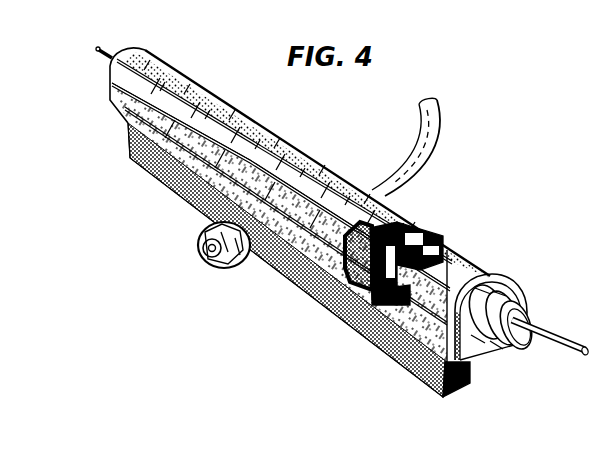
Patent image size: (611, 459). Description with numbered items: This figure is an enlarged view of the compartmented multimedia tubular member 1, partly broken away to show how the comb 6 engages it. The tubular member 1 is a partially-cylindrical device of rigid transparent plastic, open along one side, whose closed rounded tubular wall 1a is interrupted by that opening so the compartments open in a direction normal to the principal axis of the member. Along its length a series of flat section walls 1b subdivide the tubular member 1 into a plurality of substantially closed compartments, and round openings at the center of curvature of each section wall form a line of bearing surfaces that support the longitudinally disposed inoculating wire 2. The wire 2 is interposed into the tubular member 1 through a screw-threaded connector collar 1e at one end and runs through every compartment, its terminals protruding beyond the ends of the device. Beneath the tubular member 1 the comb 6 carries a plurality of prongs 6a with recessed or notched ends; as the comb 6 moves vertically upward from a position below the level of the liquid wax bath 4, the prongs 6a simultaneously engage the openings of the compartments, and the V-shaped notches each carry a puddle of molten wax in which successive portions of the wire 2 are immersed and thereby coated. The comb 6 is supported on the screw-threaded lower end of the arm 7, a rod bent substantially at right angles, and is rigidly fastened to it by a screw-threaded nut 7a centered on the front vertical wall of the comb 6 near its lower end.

The tubular member 1 is at (280, 134).
The tubular wall 1a is at (156, 53).
The section walls 1b is at (227, 111).
The screw-threaded connector collar 1e is at (536, 306).
The inoculating wire 2 is at (100, 49).
The wax bath 4 is at (440, 247).
The comb 6 is at (180, 181).
The prongs 6a is at (418, 234).
The arm 7 is at (411, 123).
The screw-threaded nut 7a is at (221, 267).